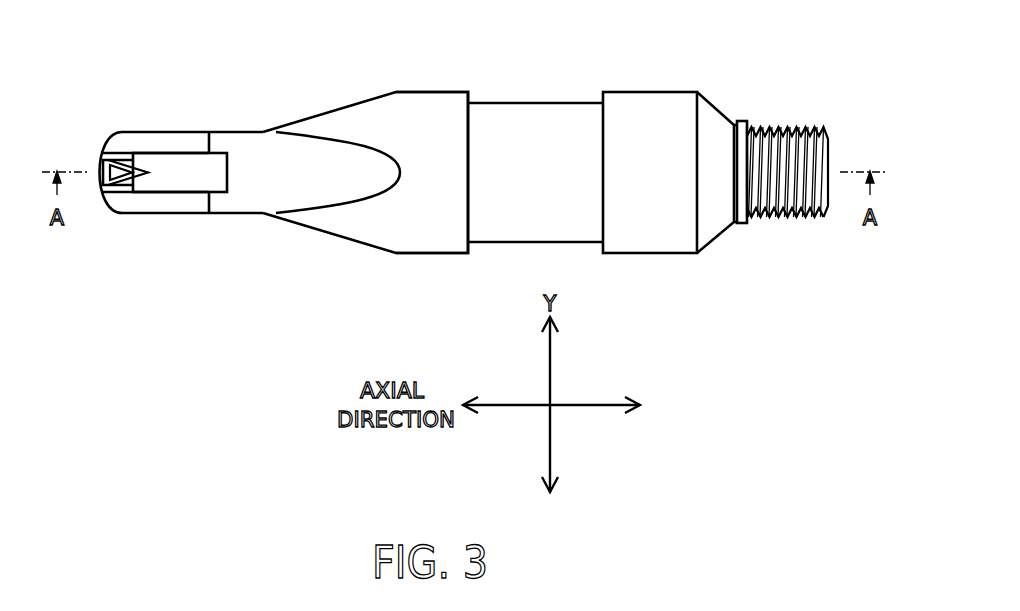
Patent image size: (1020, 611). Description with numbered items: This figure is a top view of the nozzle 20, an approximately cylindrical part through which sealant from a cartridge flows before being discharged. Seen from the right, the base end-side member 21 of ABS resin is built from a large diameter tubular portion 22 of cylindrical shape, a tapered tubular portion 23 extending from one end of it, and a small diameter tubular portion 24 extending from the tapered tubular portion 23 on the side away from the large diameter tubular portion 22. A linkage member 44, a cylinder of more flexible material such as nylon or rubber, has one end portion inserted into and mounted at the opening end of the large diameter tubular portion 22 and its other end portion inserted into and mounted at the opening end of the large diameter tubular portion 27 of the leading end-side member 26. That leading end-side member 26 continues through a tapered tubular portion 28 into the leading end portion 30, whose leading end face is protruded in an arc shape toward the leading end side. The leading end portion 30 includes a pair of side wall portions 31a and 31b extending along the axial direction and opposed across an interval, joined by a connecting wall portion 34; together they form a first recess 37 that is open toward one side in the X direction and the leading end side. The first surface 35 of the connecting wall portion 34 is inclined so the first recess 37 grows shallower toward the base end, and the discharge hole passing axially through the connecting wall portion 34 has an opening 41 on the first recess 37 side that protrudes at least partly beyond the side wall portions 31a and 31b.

The nozzle 20 is at (596, 50).
The base end-side member 21 is at (757, 76).
The large diameter tubular portion 22 is at (652, 100).
The tapered tubular portion 23 is at (710, 118).
The small diameter tubular portion 24 is at (797, 132).
The leading end-side member 26 is at (364, 79).
The large diameter tubular portion 27 is at (435, 100).
The tapered tubular portion 28 is at (322, 158).
The leading end portion 30 is at (129, 115).
The side wall portion 31a is at (190, 207).
The side wall portion 31b is at (190, 138).
The connecting wall portion 34 is at (124, 190).
The first surface 35 is at (170, 162).
The first recess 37 is at (168, 195).
The opening 41 is at (104, 169).
The linkage member 44 is at (538, 112).